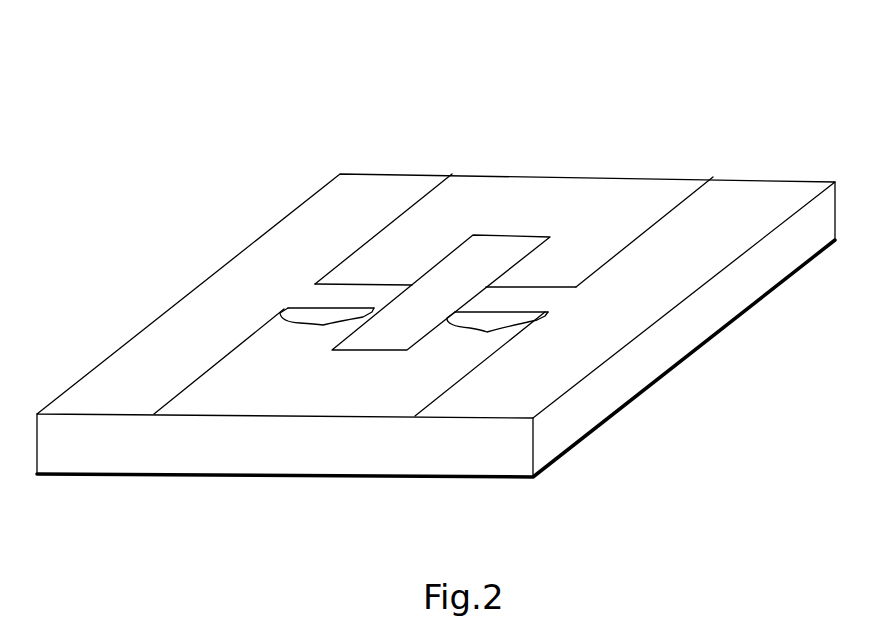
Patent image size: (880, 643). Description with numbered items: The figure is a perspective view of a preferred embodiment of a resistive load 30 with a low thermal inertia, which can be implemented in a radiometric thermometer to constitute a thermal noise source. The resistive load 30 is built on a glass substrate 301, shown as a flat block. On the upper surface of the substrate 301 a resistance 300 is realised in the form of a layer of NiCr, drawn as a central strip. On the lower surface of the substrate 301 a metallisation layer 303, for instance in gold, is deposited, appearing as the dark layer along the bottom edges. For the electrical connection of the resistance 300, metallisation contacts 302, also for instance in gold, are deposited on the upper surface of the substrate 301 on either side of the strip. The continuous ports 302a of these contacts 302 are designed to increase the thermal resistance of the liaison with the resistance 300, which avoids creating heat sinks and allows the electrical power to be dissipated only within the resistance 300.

The resistive load 30 is at (436, 303).
The resistance 300 is at (497, 252).
The glass substrate 301 is at (278, 455).
The metallisation contacts 302 is at (255, 275).
The continuous ports 302a is at (414, 330).
The metallisation layer 303 is at (436, 404).